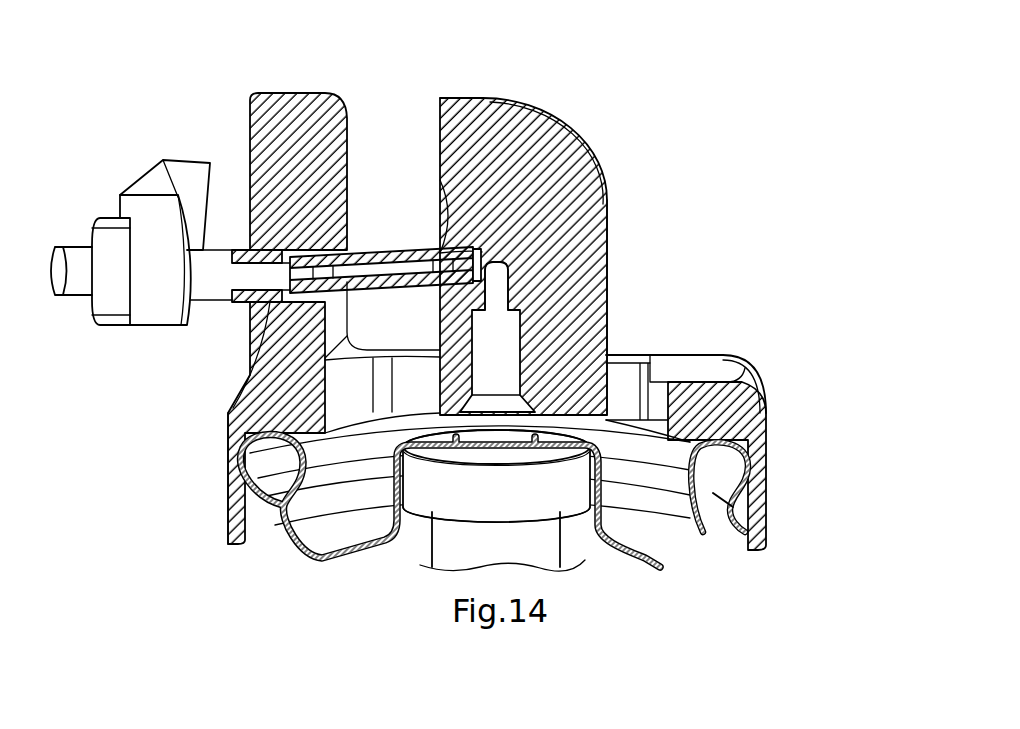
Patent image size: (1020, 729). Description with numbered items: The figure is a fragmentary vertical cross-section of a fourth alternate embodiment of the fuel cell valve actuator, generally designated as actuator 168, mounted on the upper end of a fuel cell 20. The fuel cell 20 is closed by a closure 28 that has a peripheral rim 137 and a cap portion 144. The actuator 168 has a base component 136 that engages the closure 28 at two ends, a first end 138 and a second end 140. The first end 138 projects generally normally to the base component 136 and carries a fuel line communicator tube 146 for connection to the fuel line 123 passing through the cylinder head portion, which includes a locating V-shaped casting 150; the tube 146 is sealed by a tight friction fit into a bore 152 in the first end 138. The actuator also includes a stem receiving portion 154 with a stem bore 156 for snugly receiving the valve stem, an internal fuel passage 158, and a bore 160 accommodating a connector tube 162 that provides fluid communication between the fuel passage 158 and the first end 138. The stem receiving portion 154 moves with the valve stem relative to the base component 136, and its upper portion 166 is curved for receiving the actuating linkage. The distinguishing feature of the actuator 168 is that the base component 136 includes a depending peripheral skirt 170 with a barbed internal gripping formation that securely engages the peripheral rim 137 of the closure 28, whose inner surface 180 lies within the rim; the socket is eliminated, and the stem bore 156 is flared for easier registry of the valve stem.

The fuel cell 20 is at (272, 578).
The closure 28 is at (655, 565).
The fuel line 123 is at (64, 300).
The base component 136 is at (642, 366).
The peripheral rim 137 is at (718, 492).
The first end 138 is at (272, 160).
The second end 140 is at (728, 402).
The cap portion 144 is at (371, 542).
The fuel line communicator tube 146 is at (238, 303).
The V-shaped casting 150 is at (158, 312).
The bore 152 is at (224, 420).
The stem receiving portion 154 is at (609, 202).
The stem bore 156 is at (512, 342).
The internal fuel passage 158 is at (518, 262).
The bore 160 is at (447, 212).
The connector tube 162 is at (394, 255).
The upper portion 166 is at (534, 104).
The actuator 168 is at (627, 127).
The depending peripheral skirt 170 is at (763, 470).
The inner surface 180 is at (312, 566).